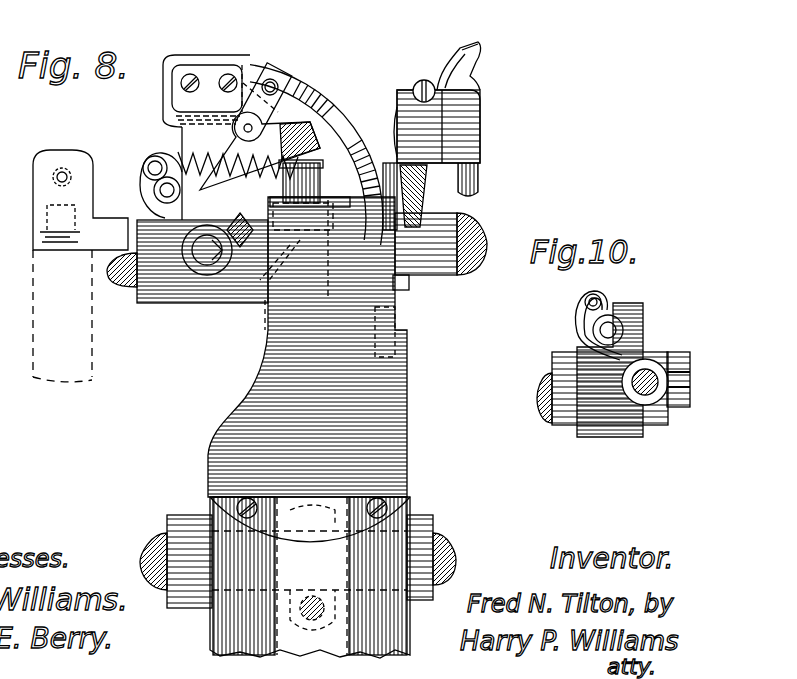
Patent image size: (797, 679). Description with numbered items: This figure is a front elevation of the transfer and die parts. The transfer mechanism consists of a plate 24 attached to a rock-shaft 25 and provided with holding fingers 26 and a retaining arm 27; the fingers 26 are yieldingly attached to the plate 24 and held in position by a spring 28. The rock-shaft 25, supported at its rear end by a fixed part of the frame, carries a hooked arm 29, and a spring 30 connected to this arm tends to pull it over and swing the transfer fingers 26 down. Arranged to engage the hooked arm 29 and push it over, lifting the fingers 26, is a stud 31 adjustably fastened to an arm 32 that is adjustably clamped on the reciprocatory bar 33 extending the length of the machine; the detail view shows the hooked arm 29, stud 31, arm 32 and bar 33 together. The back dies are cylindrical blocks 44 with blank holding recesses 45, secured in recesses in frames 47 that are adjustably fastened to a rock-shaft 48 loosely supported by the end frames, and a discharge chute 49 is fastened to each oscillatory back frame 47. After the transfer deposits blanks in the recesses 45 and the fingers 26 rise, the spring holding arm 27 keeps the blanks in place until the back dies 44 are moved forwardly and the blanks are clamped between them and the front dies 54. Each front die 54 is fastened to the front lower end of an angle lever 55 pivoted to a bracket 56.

In FIG. 8, the plate 24 is at (163, 125).
In FIG. 8, the rock-shaft 25 is at (207, 276).
In FIG. 10, the rock-shaft 25 is at (652, 410).
In FIG. 8, the holding fingers 26 is at (317, 110).
In FIG. 8, the retaining arm 27 is at (363, 160).
In FIG. 8, the spring 28 is at (275, 86).
In FIG. 8, the hooked arm 29 is at (143, 178).
In FIG. 10, the hooked arm 29 is at (577, 322).
In FIG. 8, the spring 30 is at (264, 179).
In FIG. 8, the stud 31 is at (154, 194).
In FIG. 10, the stud 31 is at (624, 328).
In FIG. 8, the arm 32 is at (107, 278).
In FIG. 10, the arm 32 is at (640, 305).
In FIG. 8, the reciprocatory bar 33 is at (478, 232).
In FIG. 10, the reciprocatory bar 33 is at (542, 397).
In FIG. 8, the back die 44 is at (262, 285).
In FIG. 8, the blank holding recesses 45 is at (272, 305).
In FIG. 8, the frame 47 is at (247, 399).
In FIG. 8, the rock-shaft 48 is at (445, 535).
In FIG. 8, the discharge chute 49 is at (215, 641).
In FIG. 8, the front die 54 is at (415, 290).
In FIG. 8, the angle lever 55 is at (479, 54).
In FIG. 8, the bracket 56 is at (482, 131).